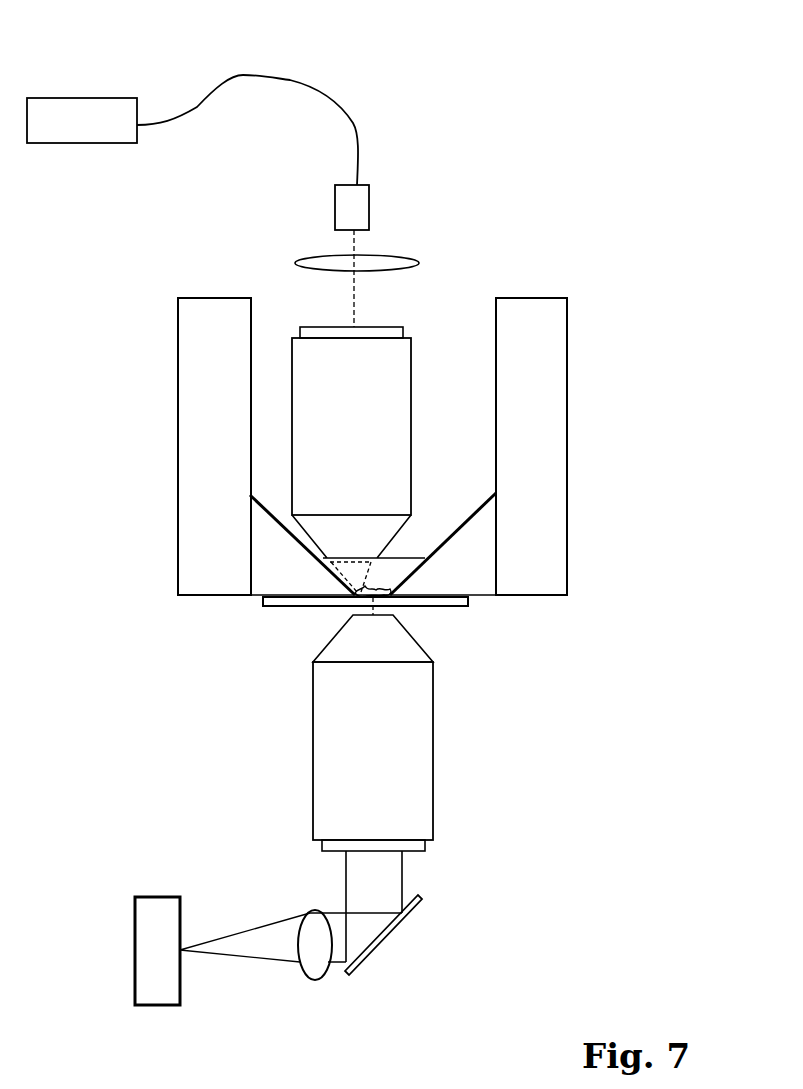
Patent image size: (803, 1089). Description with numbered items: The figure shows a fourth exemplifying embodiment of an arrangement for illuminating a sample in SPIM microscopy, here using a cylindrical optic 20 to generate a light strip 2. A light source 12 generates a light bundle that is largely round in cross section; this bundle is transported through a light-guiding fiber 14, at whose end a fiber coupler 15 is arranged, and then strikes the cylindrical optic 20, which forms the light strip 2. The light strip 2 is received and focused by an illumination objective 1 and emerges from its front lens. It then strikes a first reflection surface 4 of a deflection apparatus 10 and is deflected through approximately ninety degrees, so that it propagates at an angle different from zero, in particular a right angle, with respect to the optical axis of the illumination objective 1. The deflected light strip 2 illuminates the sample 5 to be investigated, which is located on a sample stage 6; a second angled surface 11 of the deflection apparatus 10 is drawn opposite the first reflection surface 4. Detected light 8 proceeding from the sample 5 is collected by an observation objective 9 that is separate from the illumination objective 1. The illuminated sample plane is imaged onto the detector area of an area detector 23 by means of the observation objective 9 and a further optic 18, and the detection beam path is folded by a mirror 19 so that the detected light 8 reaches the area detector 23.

The illumination objective 1 is at (387, 408).
The light strip 2 is at (352, 310).
The first reflection surface 4 is at (267, 510).
The sample 5 is at (372, 587).
The sample stage 6 is at (308, 605).
The detected light 8 is at (390, 868).
The observation objective 9 is at (420, 758).
The deflection apparatus 10 is at (155, 475).
The mirror 11 is at (477, 510).
The light source 12 is at (76, 108).
The light-guiding fiber 14 is at (292, 82).
The fiber coupler 15 is at (360, 207).
The further optic 18 is at (313, 927).
The mirror 19 is at (390, 933).
The cylindrical optic 20 is at (380, 267).
The area detector 23 is at (147, 938).